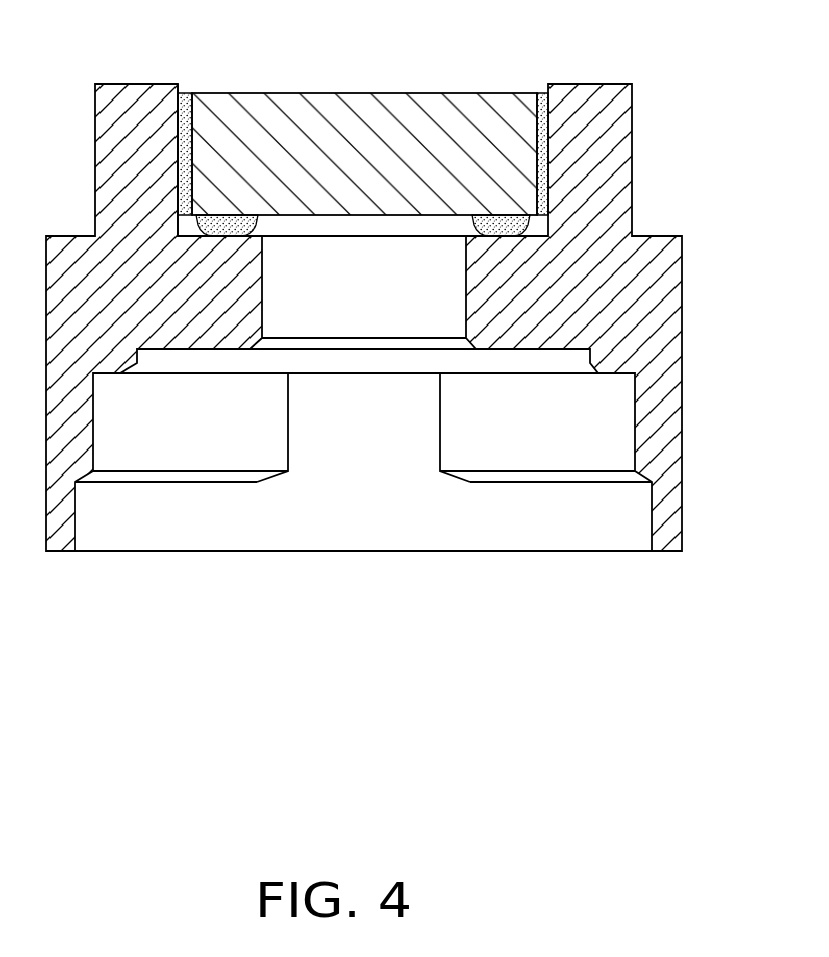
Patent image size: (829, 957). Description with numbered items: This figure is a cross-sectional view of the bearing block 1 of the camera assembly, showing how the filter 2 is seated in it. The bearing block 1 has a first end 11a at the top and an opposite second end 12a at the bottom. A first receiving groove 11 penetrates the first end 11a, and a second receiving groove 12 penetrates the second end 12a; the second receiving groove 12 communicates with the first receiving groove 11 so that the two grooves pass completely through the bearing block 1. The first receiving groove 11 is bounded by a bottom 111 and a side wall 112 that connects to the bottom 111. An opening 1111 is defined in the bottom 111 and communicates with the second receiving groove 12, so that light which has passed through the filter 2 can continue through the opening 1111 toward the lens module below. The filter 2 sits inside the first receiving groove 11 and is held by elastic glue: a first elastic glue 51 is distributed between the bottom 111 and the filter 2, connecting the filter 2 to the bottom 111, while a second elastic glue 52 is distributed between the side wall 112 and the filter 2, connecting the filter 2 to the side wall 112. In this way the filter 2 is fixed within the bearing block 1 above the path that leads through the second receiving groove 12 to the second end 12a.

The bearing block 1 is at (672, 323).
The first receiving groove 11 is at (327, 223).
The bottom 111 is at (191, 235).
The opening 1111 is at (433, 237).
The side wall 112 is at (190, 148).
The first end 11a is at (625, 58).
The second receiving groove 12 is at (367, 462).
The second end 12a is at (600, 568).
The filter 2 is at (422, 117).
The first elastic glue 51 is at (503, 227).
The second elastic glue 52 is at (550, 135).